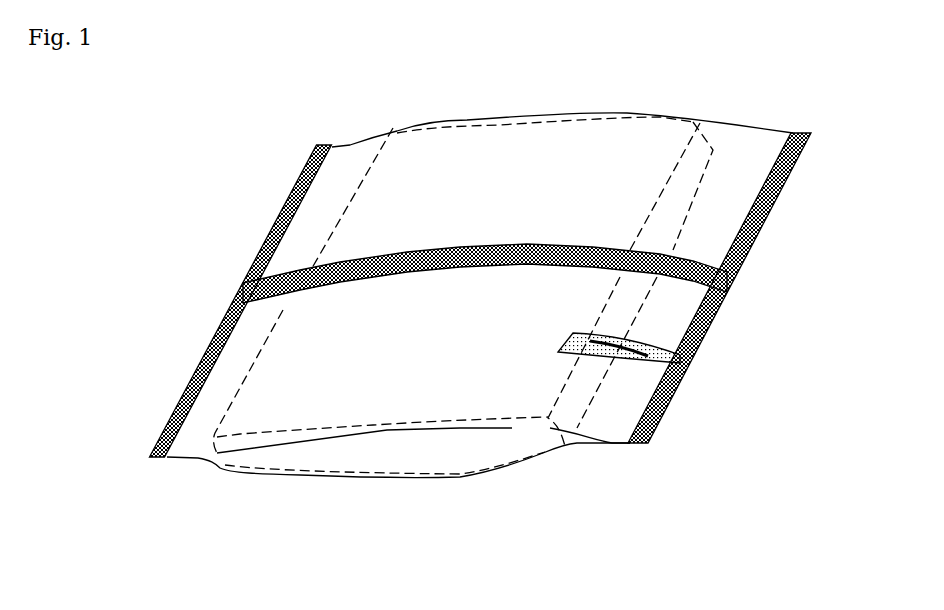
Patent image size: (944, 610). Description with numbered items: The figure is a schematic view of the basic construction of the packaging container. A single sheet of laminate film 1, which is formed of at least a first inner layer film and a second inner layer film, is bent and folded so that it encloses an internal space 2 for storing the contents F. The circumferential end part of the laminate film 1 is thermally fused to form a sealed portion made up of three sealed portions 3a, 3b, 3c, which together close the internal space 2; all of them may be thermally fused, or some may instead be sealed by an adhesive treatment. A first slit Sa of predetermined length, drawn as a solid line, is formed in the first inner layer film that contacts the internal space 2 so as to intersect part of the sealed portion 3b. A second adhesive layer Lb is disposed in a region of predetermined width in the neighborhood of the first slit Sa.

The laminate film 1 is at (733, 122).
The internal space 2 is at (740, 155).
The sealed portion 3a is at (292, 197).
The sealed portion 3b is at (770, 213).
The sealed portion 3c is at (462, 272).
The second adhesive layer Lb is at (572, 333).
The first slit Sa is at (640, 355).
The contents F is at (388, 455).